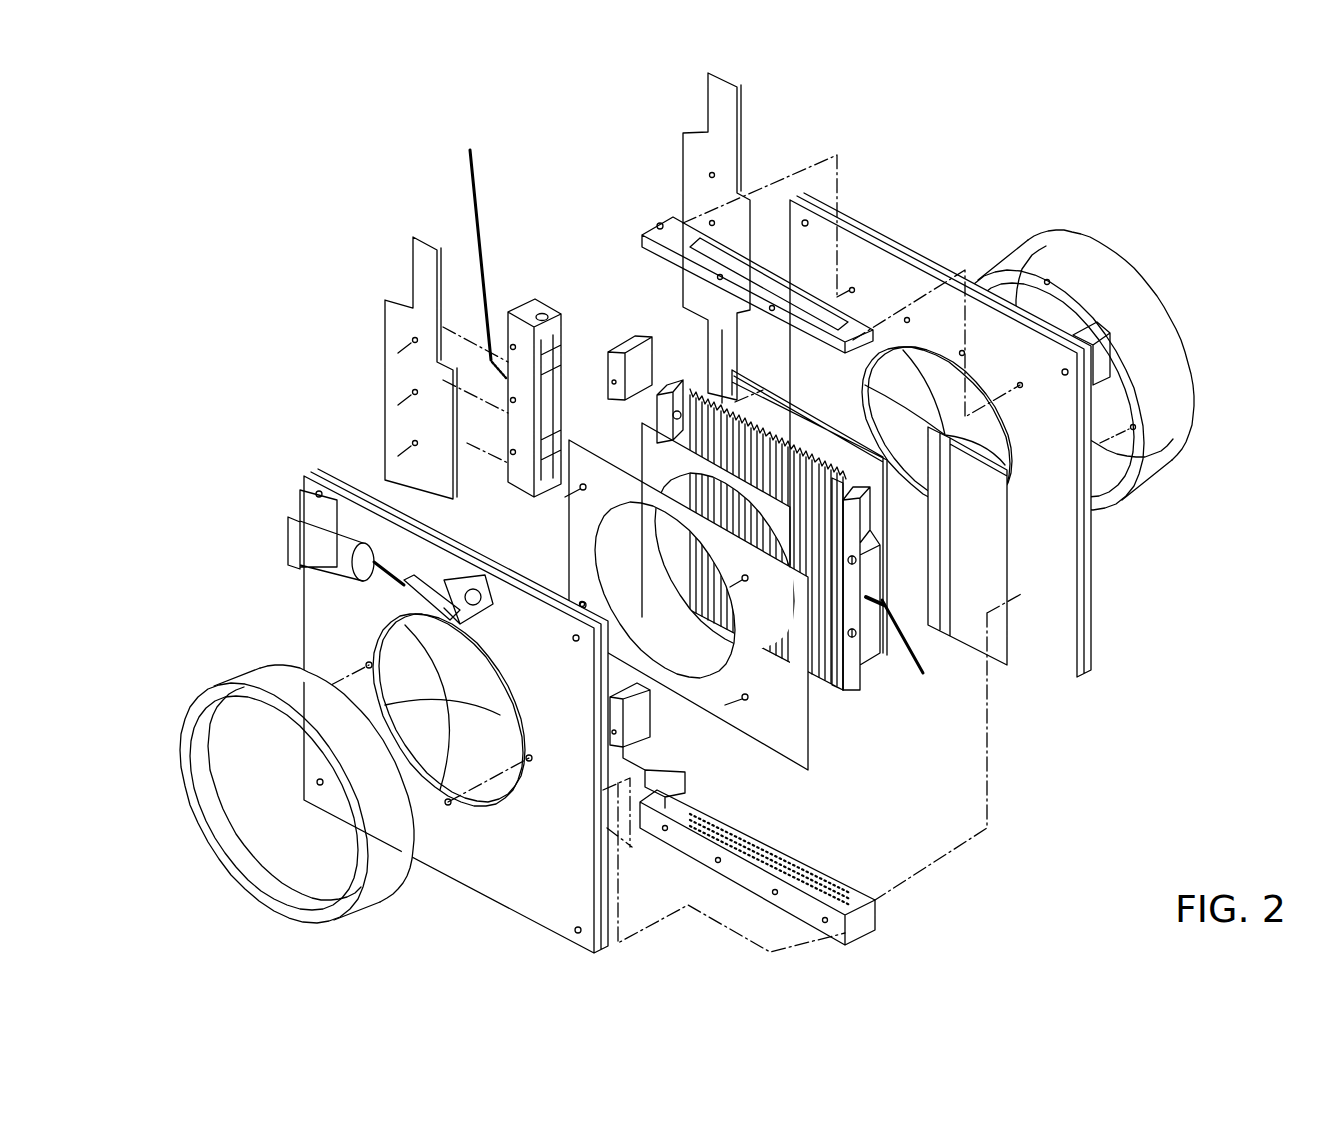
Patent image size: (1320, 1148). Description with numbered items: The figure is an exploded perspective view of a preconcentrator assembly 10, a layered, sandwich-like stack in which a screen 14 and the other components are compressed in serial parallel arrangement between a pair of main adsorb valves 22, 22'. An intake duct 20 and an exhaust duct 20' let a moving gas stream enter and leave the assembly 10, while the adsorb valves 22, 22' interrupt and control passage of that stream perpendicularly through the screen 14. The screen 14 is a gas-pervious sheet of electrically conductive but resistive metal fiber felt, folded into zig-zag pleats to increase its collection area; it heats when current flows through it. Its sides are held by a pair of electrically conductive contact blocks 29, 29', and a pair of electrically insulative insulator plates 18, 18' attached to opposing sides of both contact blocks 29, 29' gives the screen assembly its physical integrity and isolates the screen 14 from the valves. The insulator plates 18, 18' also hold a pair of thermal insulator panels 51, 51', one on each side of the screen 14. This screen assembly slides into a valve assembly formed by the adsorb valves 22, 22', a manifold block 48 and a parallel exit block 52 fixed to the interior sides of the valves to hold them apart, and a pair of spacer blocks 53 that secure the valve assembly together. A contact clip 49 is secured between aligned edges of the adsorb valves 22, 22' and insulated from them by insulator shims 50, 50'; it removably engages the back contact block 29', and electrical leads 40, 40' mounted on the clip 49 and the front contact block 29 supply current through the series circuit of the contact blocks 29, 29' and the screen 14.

The preconcentrator assembly 10 is at (405, 125).
The screen 14 is at (817, 663).
The insulator plate 18 is at (730, 621).
The insulator plate 18' is at (1061, 546).
The intake duct 20 is at (324, 802).
The exhaust duct 20' is at (1080, 348).
The main adsorb valve 22 is at (566, 711).
The main adsorb valve 22' is at (896, 527).
The contact block 29 is at (912, 628).
The contact block 29' is at (681, 385).
The electrical lead 40 is at (920, 664).
The electrical lead 40' is at (533, 230).
The manifold block 48 is at (877, 917).
The contact clip 49 is at (527, 310).
The insulator shim 50 is at (395, 342).
The insulator shim 50' is at (757, 238).
The thermal insulator panel 51 is at (681, 518).
The thermal insulator panel 51' is at (968, 512).
The exit block 52 is at (653, 227).
The spacer block 53 is at (620, 353).